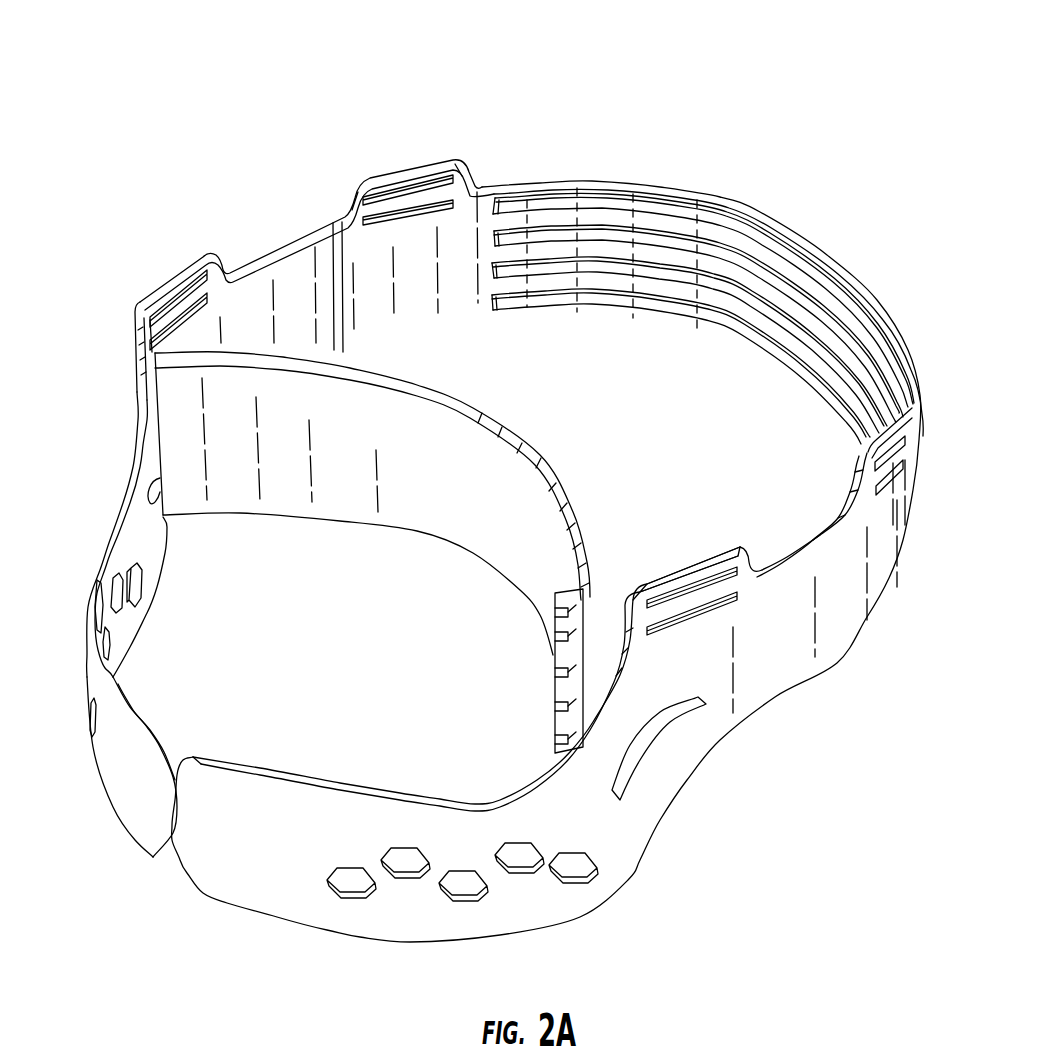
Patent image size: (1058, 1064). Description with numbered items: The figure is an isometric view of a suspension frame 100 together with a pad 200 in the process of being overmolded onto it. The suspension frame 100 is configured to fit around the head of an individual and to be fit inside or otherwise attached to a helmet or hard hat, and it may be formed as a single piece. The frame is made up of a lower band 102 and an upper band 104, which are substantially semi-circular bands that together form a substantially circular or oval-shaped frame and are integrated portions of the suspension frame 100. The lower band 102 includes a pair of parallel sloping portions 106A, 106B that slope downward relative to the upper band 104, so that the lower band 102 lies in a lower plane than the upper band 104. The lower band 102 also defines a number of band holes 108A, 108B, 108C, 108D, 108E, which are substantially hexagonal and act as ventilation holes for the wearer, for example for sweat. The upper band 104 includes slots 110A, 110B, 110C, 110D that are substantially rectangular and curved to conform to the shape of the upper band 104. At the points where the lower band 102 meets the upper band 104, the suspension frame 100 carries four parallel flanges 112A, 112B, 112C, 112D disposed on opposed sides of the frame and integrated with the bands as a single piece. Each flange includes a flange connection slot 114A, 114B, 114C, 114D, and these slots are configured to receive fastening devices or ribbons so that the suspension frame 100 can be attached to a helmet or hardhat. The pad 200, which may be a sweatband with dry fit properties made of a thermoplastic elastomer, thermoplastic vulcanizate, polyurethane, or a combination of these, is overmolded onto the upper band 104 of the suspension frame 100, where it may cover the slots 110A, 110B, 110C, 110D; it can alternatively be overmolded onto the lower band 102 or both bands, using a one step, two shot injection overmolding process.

The suspension frame 100 is at (228, 96).
The lower band 102 is at (90, 597).
The upper band 104 is at (282, 273).
The sloping portion 106A is at (118, 503).
The sloping portion 106B is at (637, 727).
The band hole 108A is at (353, 887).
The band hole 108B is at (405, 857).
The band hole 108C is at (463, 883).
The band hole 108D is at (517, 853).
The band hole 108E is at (573, 868).
The slot 110A is at (547, 297).
The slot 110B is at (653, 268).
The slot 110C is at (727, 250).
The slot 110D is at (823, 258).
The flange 112A is at (439, 166).
The flange 112B is at (150, 286).
The flange 112C is at (692, 561).
The flange 112D is at (869, 493).
The flange connection slot 114A is at (393, 192).
The flange connection slot 114B is at (186, 280).
The flange connection slot 114C is at (710, 580).
The flange connection slot 114D is at (890, 478).
The pad 200 is at (434, 516).